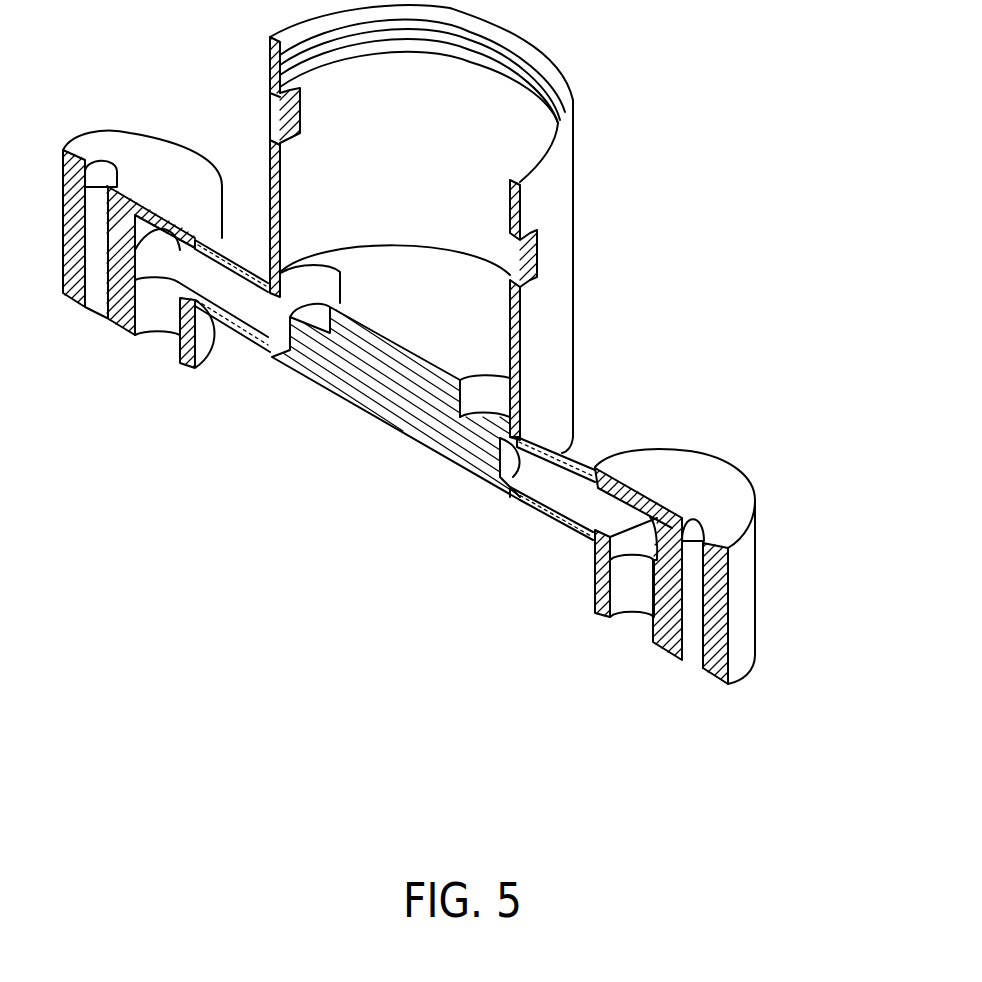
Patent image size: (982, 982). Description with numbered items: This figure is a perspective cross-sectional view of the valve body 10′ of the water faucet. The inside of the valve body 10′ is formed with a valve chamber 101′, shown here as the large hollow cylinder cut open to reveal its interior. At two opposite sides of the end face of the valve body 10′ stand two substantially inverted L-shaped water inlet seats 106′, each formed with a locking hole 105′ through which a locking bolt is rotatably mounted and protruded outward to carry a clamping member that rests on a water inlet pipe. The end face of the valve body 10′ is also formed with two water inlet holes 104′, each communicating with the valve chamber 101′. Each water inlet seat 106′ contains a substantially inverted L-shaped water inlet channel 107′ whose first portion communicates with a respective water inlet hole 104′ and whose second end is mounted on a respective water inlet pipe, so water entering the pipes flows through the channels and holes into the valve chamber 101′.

The valve body 10′ is at (380, 422).
The valve chamber 101′ is at (498, 133).
The water inlet hole 104′ is at (490, 394).
The locking hole 105′ is at (693, 647).
The water inlet seat 106′ is at (692, 474).
The water inlet channel 107′ is at (553, 490).